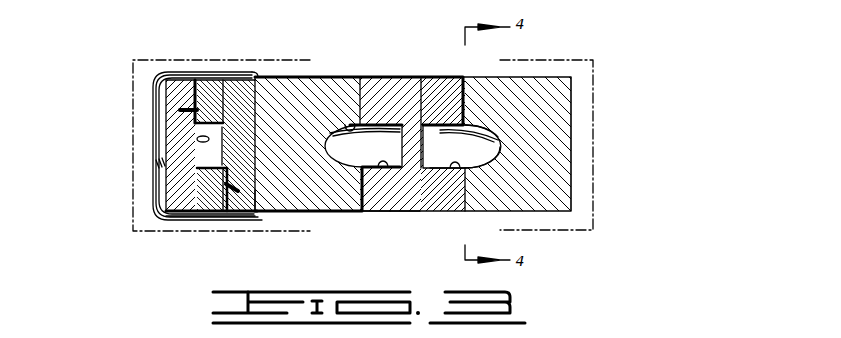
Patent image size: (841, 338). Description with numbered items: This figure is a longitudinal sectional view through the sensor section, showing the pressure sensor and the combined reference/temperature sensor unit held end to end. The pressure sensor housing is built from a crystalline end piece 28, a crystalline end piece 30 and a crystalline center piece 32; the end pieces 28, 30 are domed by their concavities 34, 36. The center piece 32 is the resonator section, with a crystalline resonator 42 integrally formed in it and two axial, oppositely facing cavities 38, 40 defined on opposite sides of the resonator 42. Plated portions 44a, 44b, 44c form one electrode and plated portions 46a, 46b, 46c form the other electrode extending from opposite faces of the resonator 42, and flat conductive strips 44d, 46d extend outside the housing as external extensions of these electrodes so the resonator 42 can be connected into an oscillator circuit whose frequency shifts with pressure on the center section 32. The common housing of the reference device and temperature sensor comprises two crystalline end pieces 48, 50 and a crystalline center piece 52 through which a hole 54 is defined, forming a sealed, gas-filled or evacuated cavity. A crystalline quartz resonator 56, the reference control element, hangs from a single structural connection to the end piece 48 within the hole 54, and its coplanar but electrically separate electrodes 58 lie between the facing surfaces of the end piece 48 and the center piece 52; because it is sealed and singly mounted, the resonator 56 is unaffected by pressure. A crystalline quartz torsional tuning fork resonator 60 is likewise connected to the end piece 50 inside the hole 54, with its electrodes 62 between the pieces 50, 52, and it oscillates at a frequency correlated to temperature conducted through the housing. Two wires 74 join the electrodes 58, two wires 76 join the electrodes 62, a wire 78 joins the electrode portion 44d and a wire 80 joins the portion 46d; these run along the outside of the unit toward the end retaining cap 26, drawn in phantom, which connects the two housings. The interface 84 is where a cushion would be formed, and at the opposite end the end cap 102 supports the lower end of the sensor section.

The end retaining cap 26 is at (133, 169).
The crystalline end piece 28 is at (553, 137).
The crystalline end piece 30 is at (330, 97).
The crystalline center piece 32 is at (401, 90).
The concavity 34 is at (493, 165).
The concavity 36 is at (350, 128).
The cavity 38 is at (453, 205).
The cavity 40 is at (377, 127).
The crystalline resonator 42 is at (420, 97).
The plated portion 44a is at (396, 212).
The plated portion 44b is at (388, 168).
The plated portion 44c is at (363, 185).
The conductor 44d is at (323, 215).
The plated portion 46a is at (447, 205).
The plated portion 46b is at (470, 136).
The plated portion 46c is at (470, 124).
The conductor 46d is at (327, 76).
The crystalline end piece 48 is at (237, 95).
The crystalline end piece 50 is at (183, 97).
The crystalline center piece 52 is at (198, 90).
The hole 54 is at (195, 170).
The crystalline quartz resonator 56 is at (197, 145).
The electrodes 58 is at (238, 193).
The crystalline quartz torsional tuning fork resonator 60 is at (208, 141).
The electrodes 62 is at (182, 110).
The wires 74 is at (170, 227).
The wires 76 is at (172, 72).
The wire 78 is at (200, 227).
The wire 80 is at (210, 70).
The interface 84 is at (257, 217).
The end cap 102 is at (593, 67).